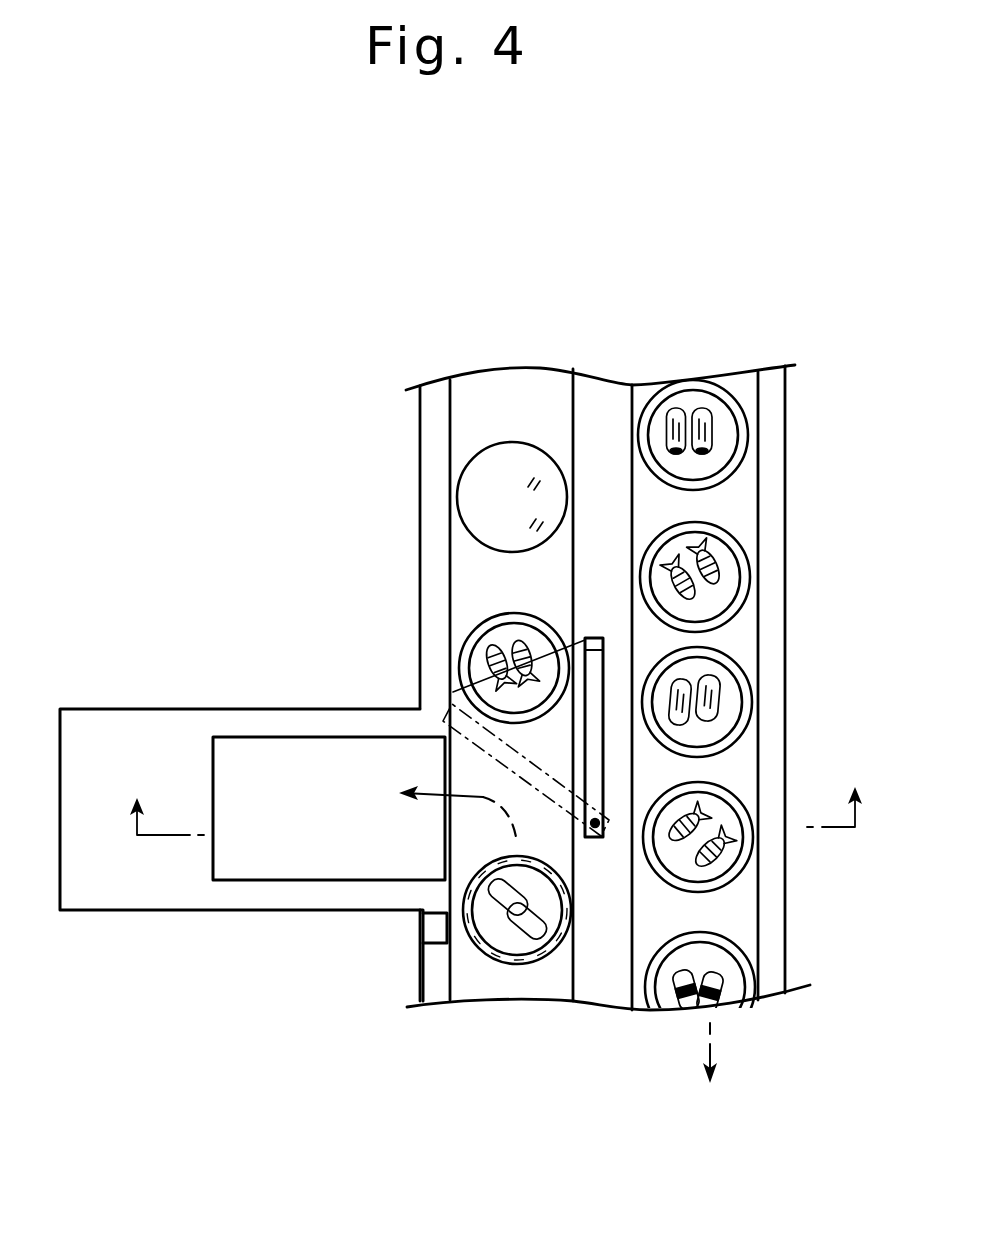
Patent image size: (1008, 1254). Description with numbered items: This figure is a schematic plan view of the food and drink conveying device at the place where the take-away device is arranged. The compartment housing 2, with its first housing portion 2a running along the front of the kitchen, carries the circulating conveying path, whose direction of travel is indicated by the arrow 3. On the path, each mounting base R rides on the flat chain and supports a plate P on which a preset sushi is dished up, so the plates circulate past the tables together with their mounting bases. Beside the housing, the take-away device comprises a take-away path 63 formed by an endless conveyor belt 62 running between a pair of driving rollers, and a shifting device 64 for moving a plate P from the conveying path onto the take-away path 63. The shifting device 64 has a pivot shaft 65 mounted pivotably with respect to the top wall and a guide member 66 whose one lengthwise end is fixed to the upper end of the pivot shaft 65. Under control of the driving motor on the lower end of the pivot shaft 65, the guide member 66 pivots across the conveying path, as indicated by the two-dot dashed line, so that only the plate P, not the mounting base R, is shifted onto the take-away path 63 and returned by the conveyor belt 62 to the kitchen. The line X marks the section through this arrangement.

The compartment housing 2 is at (783, 447).
The first housing portion 2a is at (437, 488).
The conveying direction 3 is at (489, 413).
The endless conveyor belt 62 is at (290, 853).
The take-away path 63 is at (277, 732).
The shifting device 64 is at (606, 778).
The pivot shaft 65 is at (595, 830).
The guide member 66 is at (603, 648).
The plate P is at (723, 425).
The mounting base R is at (530, 463).
The section line X is at (495, 791).